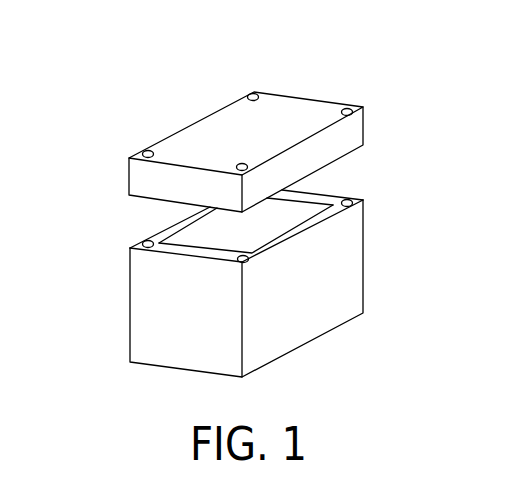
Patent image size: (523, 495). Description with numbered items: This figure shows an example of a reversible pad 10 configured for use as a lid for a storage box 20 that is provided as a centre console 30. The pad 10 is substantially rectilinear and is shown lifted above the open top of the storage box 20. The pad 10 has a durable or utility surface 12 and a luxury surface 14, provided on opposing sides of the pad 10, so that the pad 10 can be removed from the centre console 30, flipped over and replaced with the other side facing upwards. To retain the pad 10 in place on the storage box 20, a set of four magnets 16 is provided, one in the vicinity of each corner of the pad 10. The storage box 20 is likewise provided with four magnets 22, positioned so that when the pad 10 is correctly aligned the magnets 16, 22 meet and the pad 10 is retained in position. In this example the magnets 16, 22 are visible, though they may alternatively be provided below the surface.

The centre console 30 is at (333, 76).
The pad 10 is at (317, 160).
The luxury surface 14 is at (200, 142).
The utility surface 12 is at (147, 198).
The magnets 16 is at (248, 168).
The storage box 20 is at (348, 291).
The magnets 22 is at (249, 259).